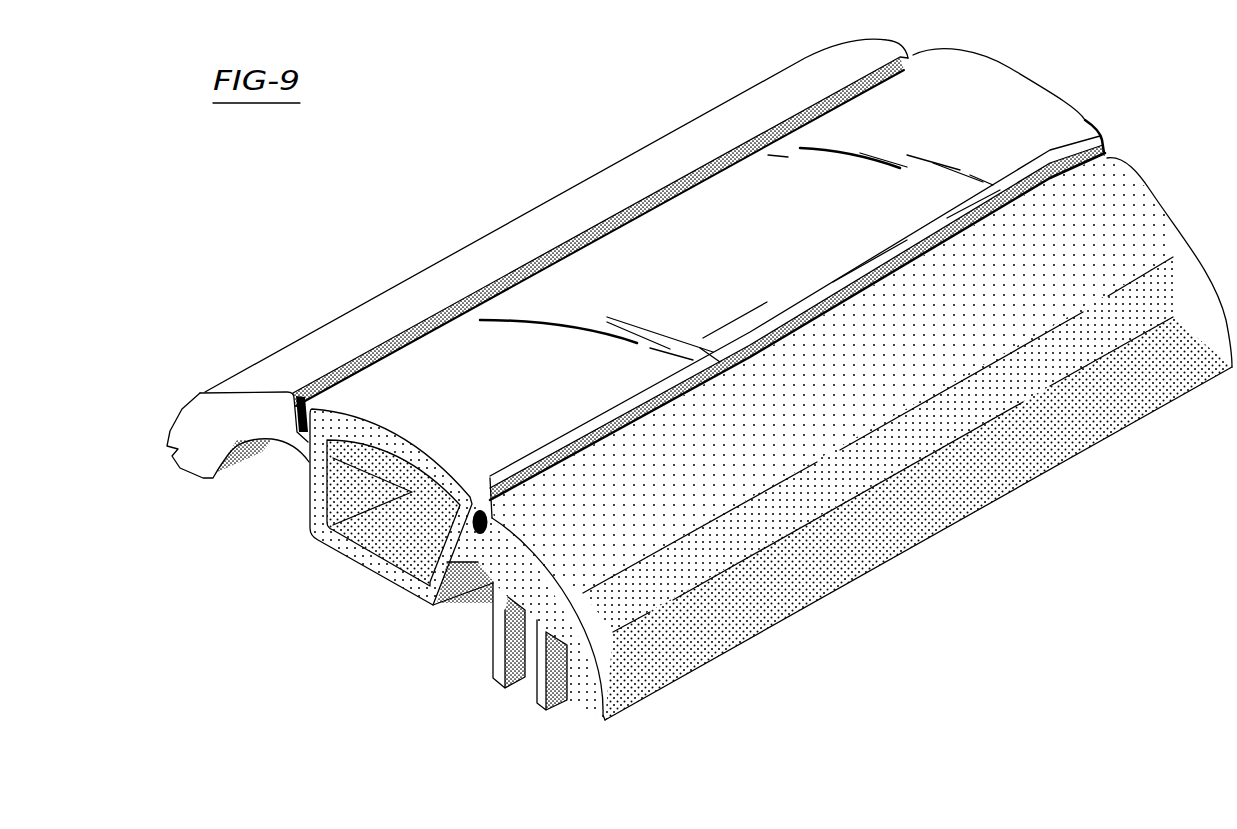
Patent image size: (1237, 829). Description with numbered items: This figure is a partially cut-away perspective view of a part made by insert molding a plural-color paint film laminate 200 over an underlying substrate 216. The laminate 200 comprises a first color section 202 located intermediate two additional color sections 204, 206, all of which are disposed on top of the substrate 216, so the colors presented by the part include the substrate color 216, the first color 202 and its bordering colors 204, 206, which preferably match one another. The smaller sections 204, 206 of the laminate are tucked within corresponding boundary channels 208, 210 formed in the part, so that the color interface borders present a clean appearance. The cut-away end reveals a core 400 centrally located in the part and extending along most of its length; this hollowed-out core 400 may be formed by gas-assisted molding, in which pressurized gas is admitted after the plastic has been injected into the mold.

The paint film laminate 200 is at (455, 409).
The first color section 202 is at (1020, 103).
The additional color section 204 is at (293, 437).
The additional color section 206 is at (460, 530).
The boundary channel 208 is at (296, 393).
The boundary channel 210 is at (1107, 157).
The substrate 216 is at (1127, 237).
The core 400 is at (398, 533).